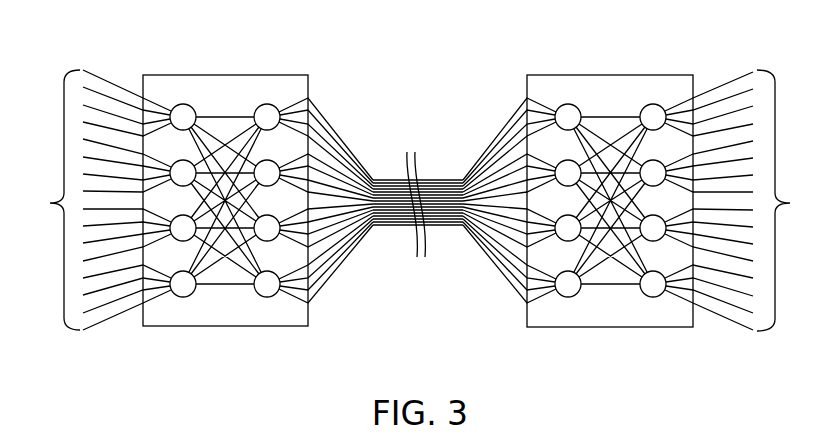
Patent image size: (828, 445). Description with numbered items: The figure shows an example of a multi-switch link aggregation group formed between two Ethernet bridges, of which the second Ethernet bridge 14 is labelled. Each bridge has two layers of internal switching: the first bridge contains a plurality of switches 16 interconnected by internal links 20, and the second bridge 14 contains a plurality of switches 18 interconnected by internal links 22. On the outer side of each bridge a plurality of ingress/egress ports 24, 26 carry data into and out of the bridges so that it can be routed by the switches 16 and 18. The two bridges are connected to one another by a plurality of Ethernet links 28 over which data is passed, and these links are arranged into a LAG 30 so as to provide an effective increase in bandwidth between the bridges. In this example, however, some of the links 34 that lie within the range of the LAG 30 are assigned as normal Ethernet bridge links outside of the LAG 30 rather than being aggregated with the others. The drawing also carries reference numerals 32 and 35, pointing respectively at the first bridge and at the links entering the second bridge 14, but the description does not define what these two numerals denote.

The second Ethernet bridge 14 is at (610, 194).
The switches of the first bridge 16 is at (267, 113).
The switches of the second bridge 18 is at (653, 113).
The internal links of the first bridge 20 is at (224, 193).
The internal links of the second bridge 22 is at (623, 300).
The ingress/egress ports of the first bridge 24 is at (92, 200).
The ingress/egress ports of the second bridge 26 is at (745, 200).
The Ethernet links 28 is at (350, 267).
The LAG 30 is at (436, 180).
The interconnections of first network 32 is at (183, 298).
The links assigned outside the LAG 34 is at (337, 204).
The diverging connection lines 35 is at (527, 228).